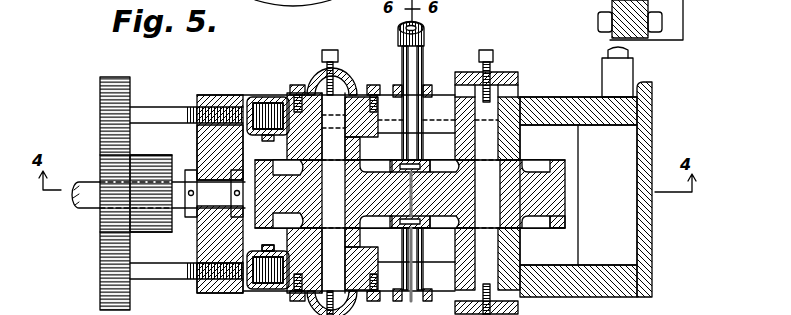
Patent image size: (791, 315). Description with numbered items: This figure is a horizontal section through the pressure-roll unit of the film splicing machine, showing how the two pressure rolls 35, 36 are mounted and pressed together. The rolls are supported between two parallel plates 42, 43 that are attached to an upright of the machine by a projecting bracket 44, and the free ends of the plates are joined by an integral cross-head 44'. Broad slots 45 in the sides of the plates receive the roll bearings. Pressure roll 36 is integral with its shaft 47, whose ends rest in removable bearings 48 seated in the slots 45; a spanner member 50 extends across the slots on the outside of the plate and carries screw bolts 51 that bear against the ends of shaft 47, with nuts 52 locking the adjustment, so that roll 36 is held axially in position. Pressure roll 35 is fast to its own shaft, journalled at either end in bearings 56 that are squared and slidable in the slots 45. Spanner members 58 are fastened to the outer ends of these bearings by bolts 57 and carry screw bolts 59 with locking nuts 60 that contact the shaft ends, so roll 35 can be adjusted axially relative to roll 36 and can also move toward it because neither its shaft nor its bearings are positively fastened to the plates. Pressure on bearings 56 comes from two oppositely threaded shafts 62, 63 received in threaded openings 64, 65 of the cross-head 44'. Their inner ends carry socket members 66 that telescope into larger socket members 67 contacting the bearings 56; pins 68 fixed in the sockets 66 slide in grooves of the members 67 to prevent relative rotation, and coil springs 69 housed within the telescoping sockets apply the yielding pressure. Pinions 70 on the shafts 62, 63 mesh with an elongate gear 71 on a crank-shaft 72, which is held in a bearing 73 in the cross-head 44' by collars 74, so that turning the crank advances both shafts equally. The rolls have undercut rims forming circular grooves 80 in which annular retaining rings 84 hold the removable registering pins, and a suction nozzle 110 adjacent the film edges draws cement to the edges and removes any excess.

The pressure roll 35 is at (300, 162).
The pressure roll 36 is at (560, 185).
The plate 42 is at (573, 96).
The plate 43 is at (560, 297).
The projecting bracket 44 is at (660, 20).
The cross-head 44' is at (193, 183).
The slot 45 is at (433, 112).
The shaft 47 is at (505, 110).
The removable bearing 48 is at (516, 96).
The spanner member 50 is at (505, 72).
The screw bolt 51 is at (491, 50).
The nut 52 is at (487, 50).
The bearing 56 is at (310, 80).
The bolt 57 is at (378, 85).
The spanner member 58 is at (350, 90).
The screw bolt 59 is at (331, 50).
The locking nut 60 is at (338, 72).
The threaded shaft 62 is at (155, 272).
The threaded shaft 63 is at (152, 116).
The threaded opening 64 is at (208, 288).
The threaded opening 65 is at (205, 95).
The socket member 66 is at (252, 105).
The socket member 67 is at (272, 104).
The pin 68 is at (266, 236).
The coil spring 69 is at (286, 236).
The pinion 70 is at (102, 120).
The elongate gear 71 is at (105, 220).
The crank-shaft 72 is at (86, 198).
The bearing 73 is at (206, 148).
The collar 74 is at (191, 218).
The circular groove 80 is at (578, 195).
The annular retaining ring 84 is at (555, 228).
The suction nozzle 110 is at (417, 108).